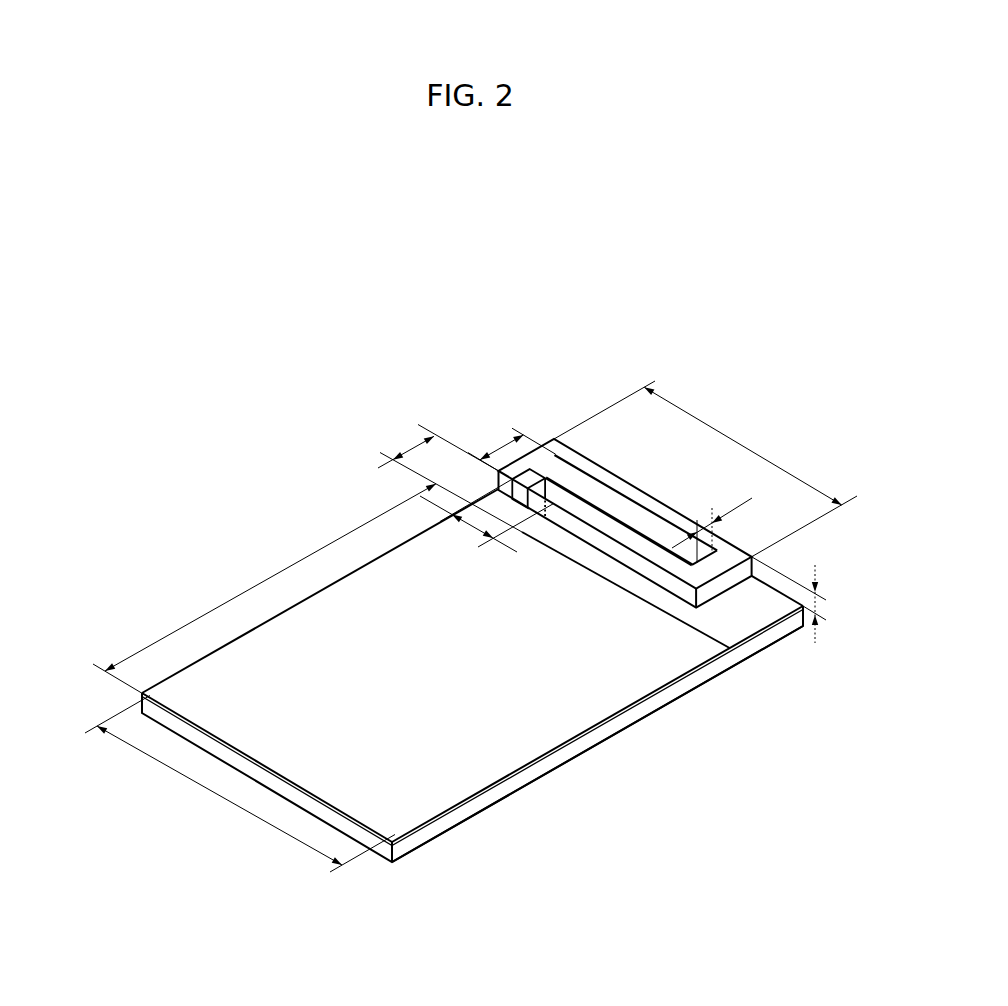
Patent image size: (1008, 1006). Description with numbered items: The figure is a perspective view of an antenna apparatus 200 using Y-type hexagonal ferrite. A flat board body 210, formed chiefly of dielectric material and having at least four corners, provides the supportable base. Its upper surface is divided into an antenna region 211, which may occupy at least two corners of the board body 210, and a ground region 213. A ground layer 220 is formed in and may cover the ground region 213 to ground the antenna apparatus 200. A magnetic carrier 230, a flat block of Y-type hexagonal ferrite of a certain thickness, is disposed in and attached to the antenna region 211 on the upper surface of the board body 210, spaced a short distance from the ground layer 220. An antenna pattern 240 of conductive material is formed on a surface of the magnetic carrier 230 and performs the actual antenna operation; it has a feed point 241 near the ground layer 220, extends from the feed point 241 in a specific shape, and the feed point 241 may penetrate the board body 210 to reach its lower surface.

The antenna apparatus 200 is at (228, 368).
The board body 210 is at (320, 812).
The antenna region 211 is at (758, 673).
The ground region 213 is at (396, 873).
The ground layer 220 is at (250, 667).
The magnetic carrier 230 is at (649, 506).
The antenna pattern 240 is at (558, 454).
The feed point 241 is at (535, 505).